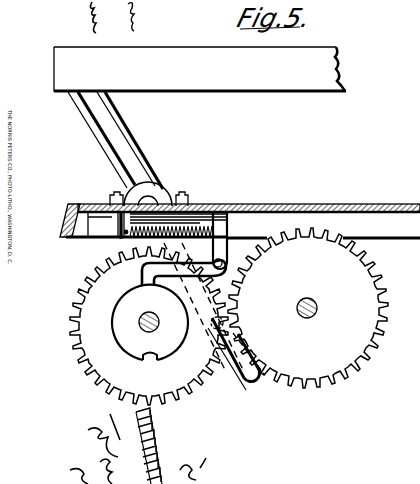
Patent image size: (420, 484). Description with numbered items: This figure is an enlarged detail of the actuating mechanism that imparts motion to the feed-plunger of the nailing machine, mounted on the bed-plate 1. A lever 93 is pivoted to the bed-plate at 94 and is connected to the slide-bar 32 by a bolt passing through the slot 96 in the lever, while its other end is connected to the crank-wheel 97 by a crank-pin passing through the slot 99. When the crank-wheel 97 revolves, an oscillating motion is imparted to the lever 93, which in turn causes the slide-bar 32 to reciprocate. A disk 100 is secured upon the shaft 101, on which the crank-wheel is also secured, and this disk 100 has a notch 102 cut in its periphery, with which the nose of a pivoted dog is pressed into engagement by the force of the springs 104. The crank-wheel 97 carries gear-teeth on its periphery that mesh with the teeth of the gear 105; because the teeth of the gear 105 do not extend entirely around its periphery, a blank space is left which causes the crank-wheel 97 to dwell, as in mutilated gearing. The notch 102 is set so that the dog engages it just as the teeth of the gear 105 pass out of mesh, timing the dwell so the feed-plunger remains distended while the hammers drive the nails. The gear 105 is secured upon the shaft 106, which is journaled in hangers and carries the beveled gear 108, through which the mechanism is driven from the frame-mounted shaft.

The frame plate 1 is at (316, 206).
The slide-bar 32 is at (292, 93).
The lever 93 is at (146, 171).
The pivot 94 is at (152, 200).
The slot 96 is at (120, 137).
The crank-wheel 97 is at (95, 353).
The slot 99 is at (248, 383).
The disk 100 is at (171, 348).
The shaft 101 is at (143, 332).
The notch 102 is at (153, 361).
The springs 104 is at (181, 229).
The gear 105 is at (303, 376).
The shaft 106 is at (303, 316).
The beveled gear 108 is at (141, 274).